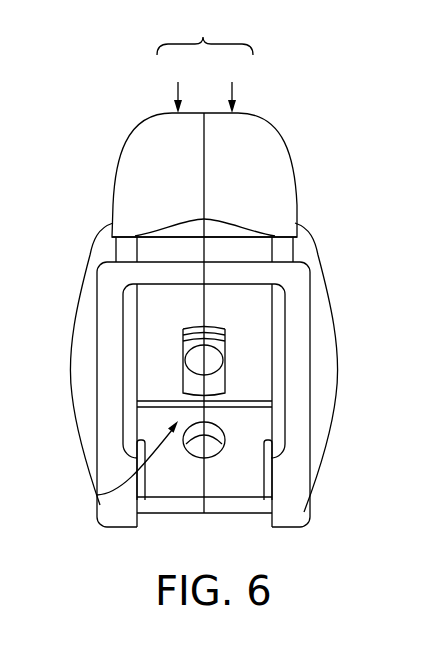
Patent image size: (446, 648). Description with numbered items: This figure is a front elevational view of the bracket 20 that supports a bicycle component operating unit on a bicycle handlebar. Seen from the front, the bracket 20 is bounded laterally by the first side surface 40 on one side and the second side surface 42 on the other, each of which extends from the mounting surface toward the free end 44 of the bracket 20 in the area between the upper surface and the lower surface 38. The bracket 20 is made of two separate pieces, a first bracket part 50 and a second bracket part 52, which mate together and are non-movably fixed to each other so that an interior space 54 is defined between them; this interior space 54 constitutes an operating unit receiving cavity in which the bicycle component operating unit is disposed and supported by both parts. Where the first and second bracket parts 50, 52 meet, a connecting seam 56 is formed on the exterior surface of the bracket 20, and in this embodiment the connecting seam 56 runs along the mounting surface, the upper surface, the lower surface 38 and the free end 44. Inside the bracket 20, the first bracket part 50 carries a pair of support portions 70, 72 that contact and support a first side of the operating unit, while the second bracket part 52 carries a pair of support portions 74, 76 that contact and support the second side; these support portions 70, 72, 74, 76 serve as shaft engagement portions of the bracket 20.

The bracket 20 is at (205, 34).
The lower surface 38 is at (235, 513).
The first side surface 40 is at (98, 363).
The second side surface 42 is at (313, 322).
The free end 44 is at (250, 170).
The first bracket part 50 is at (176, 86).
The second bracket part 52 is at (230, 86).
The interior space 54 is at (123, 465).
The connecting seam 56 is at (203, 180).
The support portion 70 is at (173, 477).
The support portion 72 is at (158, 320).
The support portion 74 is at (245, 475).
The support portion 76 is at (248, 362).